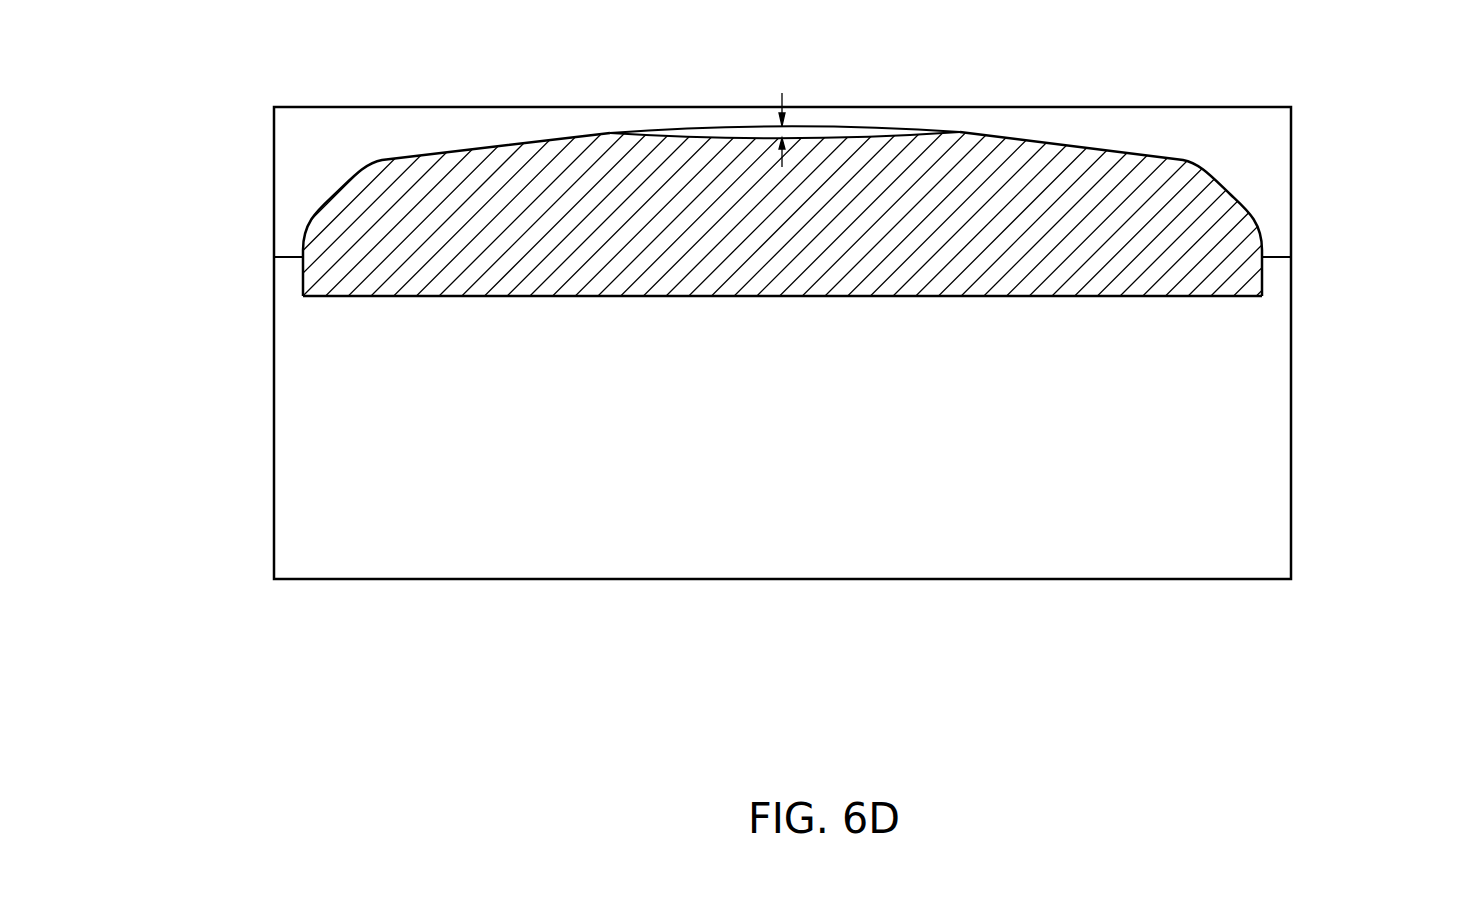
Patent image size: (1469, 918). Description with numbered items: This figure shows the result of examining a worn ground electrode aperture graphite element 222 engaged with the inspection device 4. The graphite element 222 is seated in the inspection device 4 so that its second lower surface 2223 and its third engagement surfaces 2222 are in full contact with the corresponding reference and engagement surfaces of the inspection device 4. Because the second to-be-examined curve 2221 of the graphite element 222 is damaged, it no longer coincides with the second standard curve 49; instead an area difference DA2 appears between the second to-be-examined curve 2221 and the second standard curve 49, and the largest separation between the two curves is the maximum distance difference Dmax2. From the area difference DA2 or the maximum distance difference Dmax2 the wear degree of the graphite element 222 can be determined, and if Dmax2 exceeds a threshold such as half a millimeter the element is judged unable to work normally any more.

The inspection device 4 is at (1282, 483).
The ground electrode aperture graphite element 222 is at (473, 164).
The second to-be-examined curve 2221 is at (858, 136).
The third engagement surfaces 2222 is at (303, 280).
The second lower surface 2223 is at (1193, 296).
The second standard curve 49 is at (818, 124).
The area difference DA2 is at (718, 136).
The maximum distance difference Dmax2 is at (777, 134).